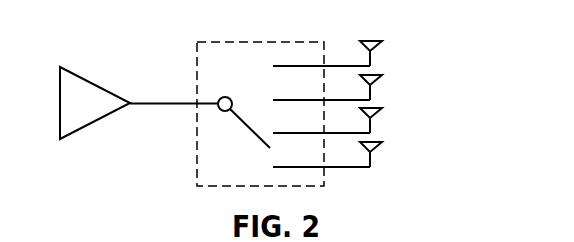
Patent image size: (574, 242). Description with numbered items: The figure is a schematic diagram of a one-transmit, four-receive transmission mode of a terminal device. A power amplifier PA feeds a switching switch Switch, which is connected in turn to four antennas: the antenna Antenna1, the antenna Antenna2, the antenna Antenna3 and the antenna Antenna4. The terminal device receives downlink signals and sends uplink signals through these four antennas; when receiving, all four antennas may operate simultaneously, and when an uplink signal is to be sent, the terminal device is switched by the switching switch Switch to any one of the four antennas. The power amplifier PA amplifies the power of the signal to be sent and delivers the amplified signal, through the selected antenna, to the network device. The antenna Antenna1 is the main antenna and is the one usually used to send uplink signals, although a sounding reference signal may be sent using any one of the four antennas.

The power amplifier PA is at (139, 103).
The switching switch Switch is at (247, 97).
The antenna 1 Antenna1 is at (379, 54).
The antenna 2 Antenna2 is at (379, 88).
The antenna 3 Antenna3 is at (379, 121).
The antenna 4 Antenna4 is at (379, 155).